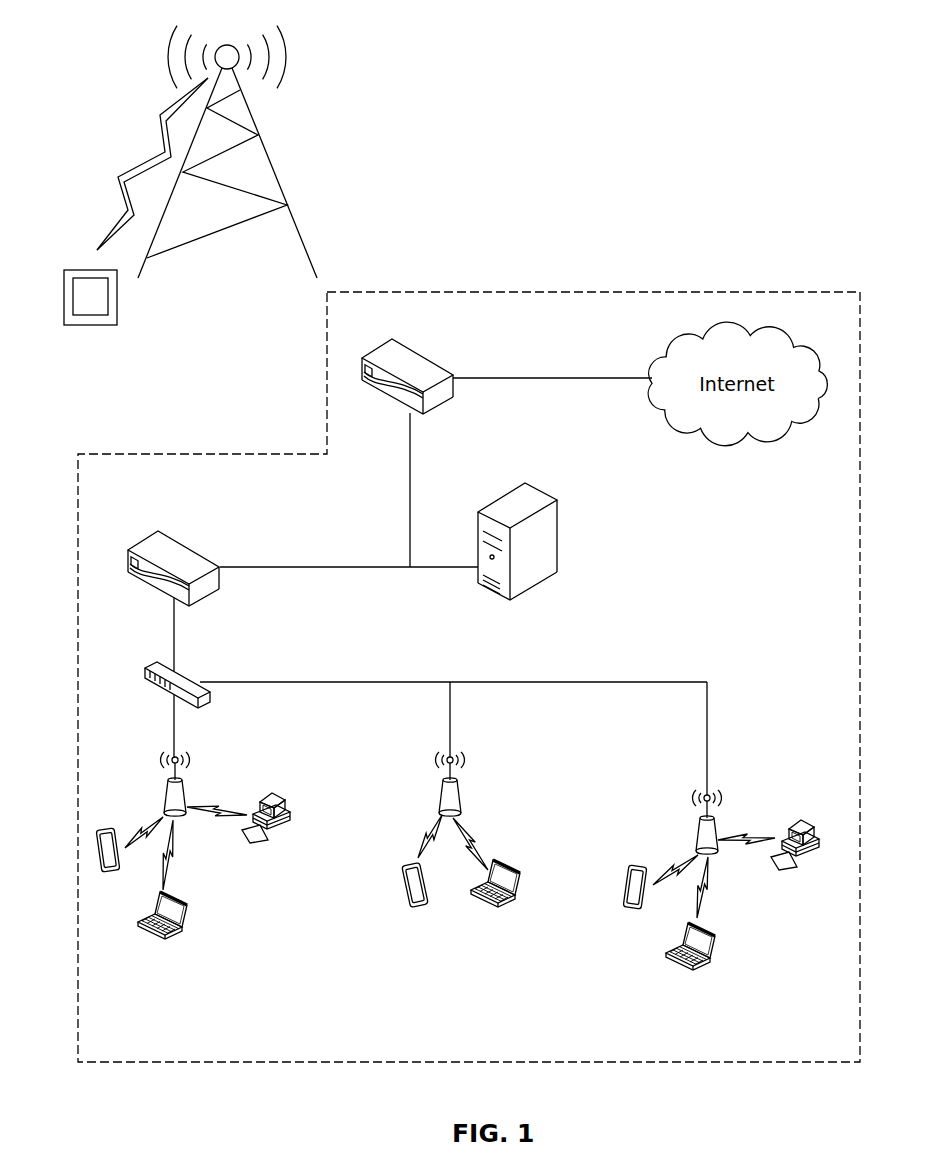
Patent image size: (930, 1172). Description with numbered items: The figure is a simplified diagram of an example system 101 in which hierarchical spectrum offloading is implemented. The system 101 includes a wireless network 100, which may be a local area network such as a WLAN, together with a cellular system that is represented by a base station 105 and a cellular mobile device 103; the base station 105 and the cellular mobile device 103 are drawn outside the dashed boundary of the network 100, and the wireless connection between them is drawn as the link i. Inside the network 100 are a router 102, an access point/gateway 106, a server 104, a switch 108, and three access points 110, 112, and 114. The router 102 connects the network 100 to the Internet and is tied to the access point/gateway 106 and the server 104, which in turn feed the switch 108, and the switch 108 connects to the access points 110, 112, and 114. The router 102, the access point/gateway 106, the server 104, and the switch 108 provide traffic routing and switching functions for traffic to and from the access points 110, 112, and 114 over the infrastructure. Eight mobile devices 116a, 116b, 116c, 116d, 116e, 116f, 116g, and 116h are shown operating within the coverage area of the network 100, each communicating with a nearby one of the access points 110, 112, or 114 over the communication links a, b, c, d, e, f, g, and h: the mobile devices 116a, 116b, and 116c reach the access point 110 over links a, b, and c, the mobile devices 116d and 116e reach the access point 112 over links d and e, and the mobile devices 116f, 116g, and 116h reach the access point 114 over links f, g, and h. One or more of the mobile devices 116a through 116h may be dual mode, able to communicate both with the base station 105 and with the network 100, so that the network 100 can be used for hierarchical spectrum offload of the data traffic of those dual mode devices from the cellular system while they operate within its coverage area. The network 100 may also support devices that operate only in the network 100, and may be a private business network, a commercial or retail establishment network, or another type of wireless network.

The wireless network 100 is at (567, 292).
The system 101 is at (432, 227).
The router 102 is at (453, 390).
The cellular mobile device 103 is at (117, 300).
The server 104 is at (557, 512).
The base station 105 is at (277, 172).
The access point/gateway 106 is at (182, 542).
The switch 108 is at (187, 673).
The access point 110 is at (163, 787).
The access point 112 is at (460, 797).
The access point 114 is at (718, 827).
The mobile device 116a is at (105, 870).
The mobile device 116b is at (167, 942).
The mobile device 116c is at (265, 842).
The mobile device 116d is at (417, 905).
The mobile device 116e is at (500, 907).
The mobile device 116f is at (633, 907).
The mobile device 116g is at (713, 953).
The mobile device 116h is at (810, 858).
The communication link a is at (142, 827).
The communication link b is at (165, 877).
The communication link c is at (227, 802).
The communication link d is at (423, 833).
The communication link e is at (477, 845).
The communication link f is at (675, 860).
The communication link g is at (712, 888).
The communication link h is at (747, 850).
The cellular wireless link i is at (147, 152).